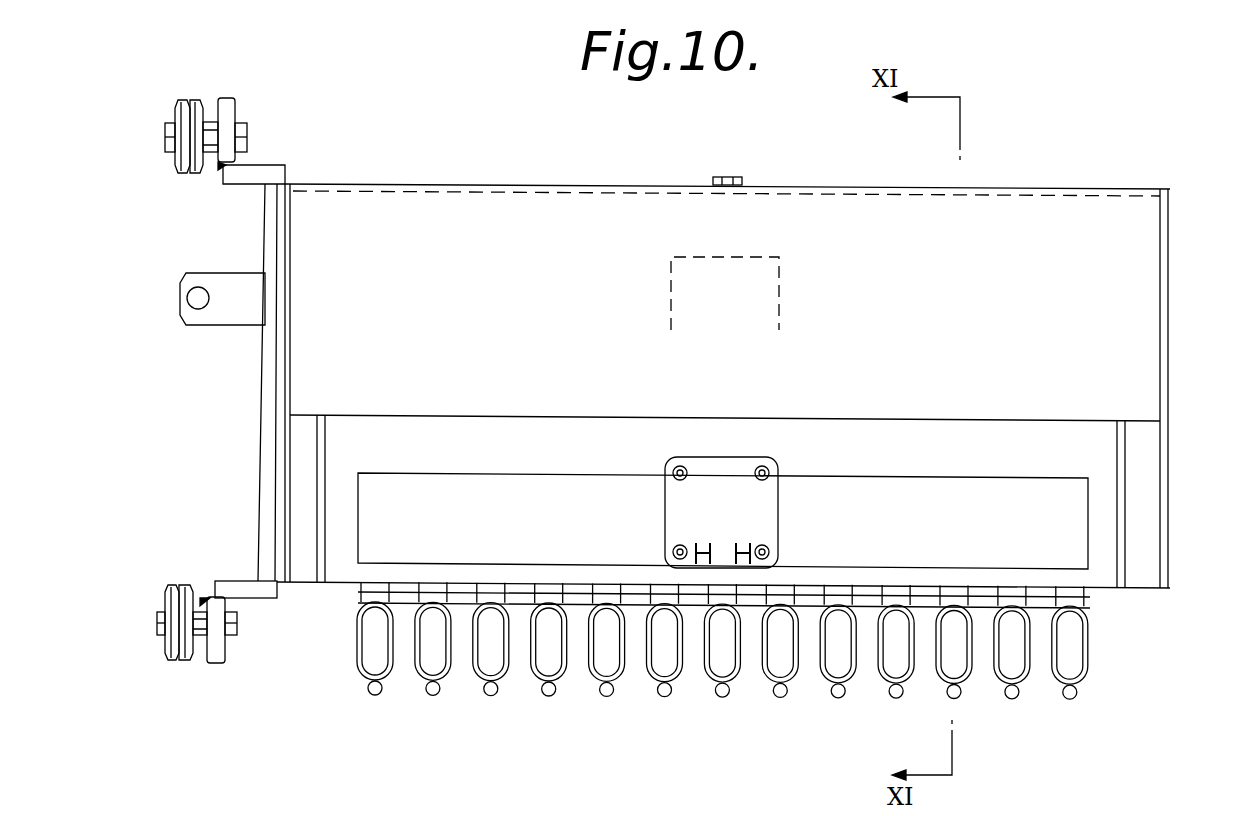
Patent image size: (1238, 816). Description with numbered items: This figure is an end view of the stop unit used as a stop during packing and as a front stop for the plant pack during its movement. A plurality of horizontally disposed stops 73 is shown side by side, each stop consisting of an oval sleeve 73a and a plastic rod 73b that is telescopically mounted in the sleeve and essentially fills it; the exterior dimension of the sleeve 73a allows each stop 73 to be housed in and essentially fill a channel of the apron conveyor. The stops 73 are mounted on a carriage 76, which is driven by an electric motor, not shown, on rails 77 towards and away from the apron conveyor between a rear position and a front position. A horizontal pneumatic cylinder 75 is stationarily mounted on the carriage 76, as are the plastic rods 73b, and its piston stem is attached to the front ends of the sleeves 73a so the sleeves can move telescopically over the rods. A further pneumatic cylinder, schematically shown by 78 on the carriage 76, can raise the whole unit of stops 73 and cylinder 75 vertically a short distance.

The stop 73 is at (745, 665).
The oval sleeve 73a is at (356, 650).
The plastic rod 73b is at (368, 663).
The horizontal pneumatic cylinder 75 is at (683, 508).
The carriage 76 is at (1057, 188).
The rail 77 is at (378, 692).
The pneumatic cylinder 78 is at (677, 257).